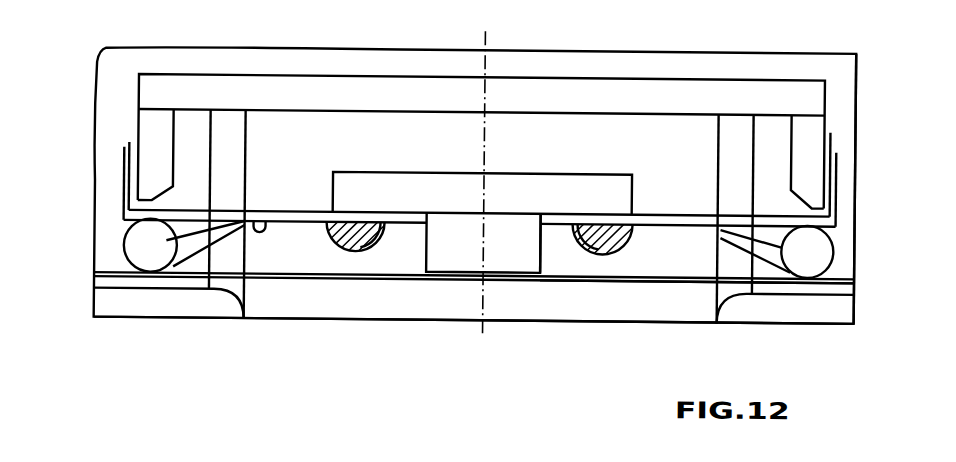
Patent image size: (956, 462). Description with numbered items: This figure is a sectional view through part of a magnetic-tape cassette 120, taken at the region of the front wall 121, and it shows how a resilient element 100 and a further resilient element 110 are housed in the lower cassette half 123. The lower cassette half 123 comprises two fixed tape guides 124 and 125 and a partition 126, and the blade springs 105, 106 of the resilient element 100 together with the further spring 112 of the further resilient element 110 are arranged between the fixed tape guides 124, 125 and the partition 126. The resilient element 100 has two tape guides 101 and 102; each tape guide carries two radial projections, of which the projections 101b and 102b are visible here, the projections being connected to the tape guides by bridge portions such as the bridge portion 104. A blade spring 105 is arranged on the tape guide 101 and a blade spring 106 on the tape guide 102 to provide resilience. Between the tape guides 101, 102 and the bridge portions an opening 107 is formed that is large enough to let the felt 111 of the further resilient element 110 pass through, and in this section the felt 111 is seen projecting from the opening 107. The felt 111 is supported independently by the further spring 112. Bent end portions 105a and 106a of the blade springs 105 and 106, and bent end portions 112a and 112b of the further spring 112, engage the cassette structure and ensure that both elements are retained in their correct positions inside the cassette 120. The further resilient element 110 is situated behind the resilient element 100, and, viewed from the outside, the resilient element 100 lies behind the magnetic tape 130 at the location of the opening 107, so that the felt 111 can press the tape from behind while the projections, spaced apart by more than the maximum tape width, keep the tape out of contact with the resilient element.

The resilient element 100 is at (638, 225).
The tape guide 101 is at (332, 238).
The radial projection 101b is at (387, 238).
The tape guide 102 is at (623, 251).
The radial projection 102b is at (583, 246).
The bridge portion 104 is at (445, 192).
The blade spring 105 is at (272, 219).
The bent end portion 105a is at (125, 177).
The blade spring 106 is at (691, 220).
The bent end portion 106a is at (837, 171).
The opening 107 is at (317, 305).
The further resilient element 110 is at (543, 208).
The felt 111 is at (465, 254).
The further spring 112 is at (662, 209).
The bent end portion 112a is at (130, 141).
The bent end portion 112b is at (831, 136).
The magnetic-tape cassette 120 is at (699, 29).
The front wall 121 is at (173, 303).
The lower cassette half 123 is at (842, 63).
The fixed tape guide 124 is at (140, 245).
The fixed tape guide 125 is at (820, 246).
The partition 126 is at (523, 96).
The magnetic tape 130 is at (700, 277).